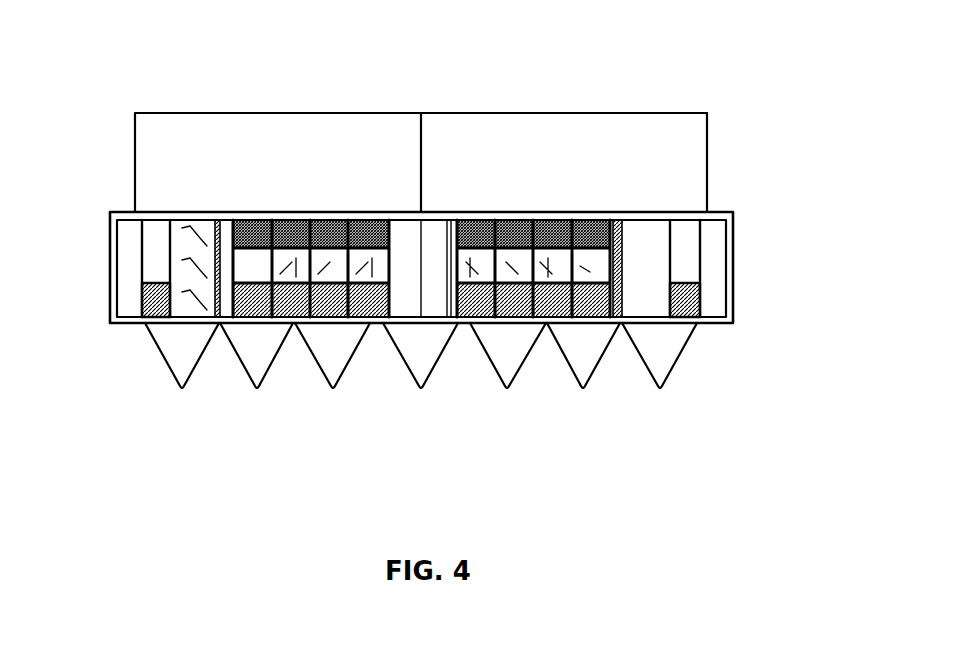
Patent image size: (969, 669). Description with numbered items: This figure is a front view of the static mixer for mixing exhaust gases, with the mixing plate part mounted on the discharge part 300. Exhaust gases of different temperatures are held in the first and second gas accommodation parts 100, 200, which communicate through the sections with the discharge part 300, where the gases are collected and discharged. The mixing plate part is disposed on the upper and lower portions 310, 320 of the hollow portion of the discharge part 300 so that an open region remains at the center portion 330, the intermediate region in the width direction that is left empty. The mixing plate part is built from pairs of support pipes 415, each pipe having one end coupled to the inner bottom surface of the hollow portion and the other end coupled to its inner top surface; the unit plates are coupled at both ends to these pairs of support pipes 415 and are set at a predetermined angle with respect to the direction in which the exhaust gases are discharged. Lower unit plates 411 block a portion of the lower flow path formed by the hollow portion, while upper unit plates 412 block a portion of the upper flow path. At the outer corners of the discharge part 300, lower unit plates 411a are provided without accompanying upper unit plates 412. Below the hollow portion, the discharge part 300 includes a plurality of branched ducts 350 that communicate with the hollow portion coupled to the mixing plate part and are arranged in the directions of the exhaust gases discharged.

The first gas accommodation part 100 is at (390, 96).
The second gas accommodation part 200 is at (538, 96).
The discharge part 300 is at (746, 240).
The upper portion of the hollow portion 310 is at (166, 304).
The lower portion of the hollow portion 320 is at (166, 240).
The center portion of the hollow portion 330 is at (637, 175).
The branched ducts 350 is at (128, 211).
The lower unit plates 411 is at (330, 328).
The lower unit plates at outer corners 411a is at (152, 334).
The upper unit plates 412 is at (245, 219).
The support pipes 415 is at (307, 219).